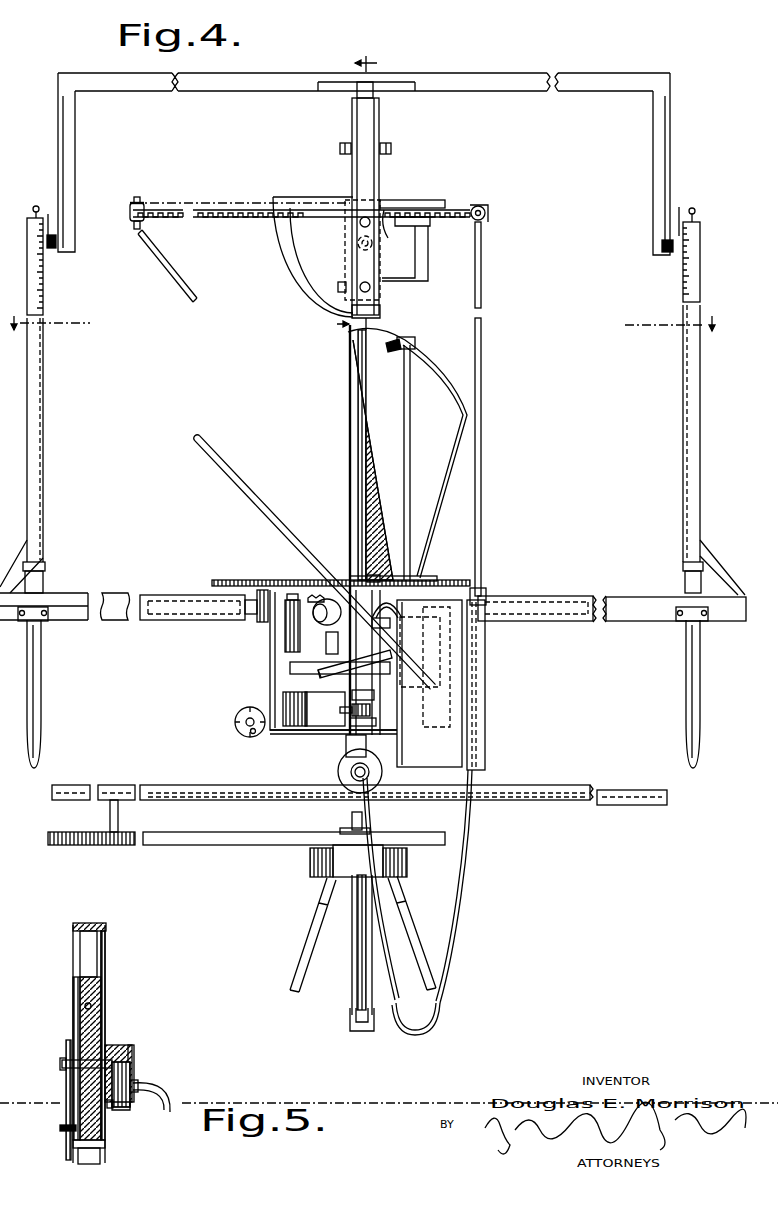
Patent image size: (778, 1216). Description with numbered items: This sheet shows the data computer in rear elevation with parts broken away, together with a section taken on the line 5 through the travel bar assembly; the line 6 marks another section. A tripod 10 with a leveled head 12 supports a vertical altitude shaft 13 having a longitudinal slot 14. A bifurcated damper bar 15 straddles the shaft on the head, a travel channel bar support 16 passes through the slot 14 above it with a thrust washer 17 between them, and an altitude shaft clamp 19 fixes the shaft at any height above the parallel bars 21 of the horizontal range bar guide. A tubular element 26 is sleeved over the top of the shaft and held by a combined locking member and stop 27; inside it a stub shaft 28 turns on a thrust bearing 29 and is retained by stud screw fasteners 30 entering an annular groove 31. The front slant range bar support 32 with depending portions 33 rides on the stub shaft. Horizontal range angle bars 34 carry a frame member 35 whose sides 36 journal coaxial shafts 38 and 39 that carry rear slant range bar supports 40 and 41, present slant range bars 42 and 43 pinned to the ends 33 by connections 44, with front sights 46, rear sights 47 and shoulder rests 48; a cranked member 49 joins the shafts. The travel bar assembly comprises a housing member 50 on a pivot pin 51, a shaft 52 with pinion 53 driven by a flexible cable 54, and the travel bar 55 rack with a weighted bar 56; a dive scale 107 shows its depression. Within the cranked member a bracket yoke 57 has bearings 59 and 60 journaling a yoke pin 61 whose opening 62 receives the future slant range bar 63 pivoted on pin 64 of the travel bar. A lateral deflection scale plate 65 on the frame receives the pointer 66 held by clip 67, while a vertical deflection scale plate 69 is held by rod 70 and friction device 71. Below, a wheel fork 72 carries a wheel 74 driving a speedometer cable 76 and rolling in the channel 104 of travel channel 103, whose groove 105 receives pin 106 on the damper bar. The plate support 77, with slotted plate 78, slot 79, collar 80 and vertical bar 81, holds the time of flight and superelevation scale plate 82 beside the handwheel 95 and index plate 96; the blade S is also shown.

In FIG. 4, the section line 5— 5 is at (350, 187).
In FIG. 4, the section line 6- 6 is at (363, 325).
In FIG. 4, the tripod 10 is at (300, 947).
In FIG. 4, the tripod head 12 is at (408, 864).
In FIG. 4, the altitude shaft rod 13 is at (350, 528).
In FIG. 5, the altitude shaft rod 13 is at (76, 1027).
In FIG. 4, the longitudinal diametral slot 14 is at (358, 499).
In FIG. 5, the longitudinal diametral slot 14 is at (93, 1157).
In FIG. 4, the bifurcated damper bar 15 is at (165, 845).
In FIG. 4, the travel channel bar support 16 is at (352, 818).
In FIG. 4, the thrust washer 17 is at (357, 840).
In FIG. 4, the altitude shaft clamp 19 is at (345, 745).
In FIG. 4, the parallel bars 21 is at (306, 727).
In FIG. 4, the tubular element 26 is at (380, 179).
In FIG. 5, the tubular element 26 is at (105, 963).
In FIG. 4, the combined locking member and stop 27 is at (392, 285).
In FIG. 5, the combined locking member and stop 27 is at (90, 1164).
In FIG. 4, the stub shaft 28 is at (356, 92).
In FIG. 5, the stub shaft 28 is at (80, 936).
In FIG. 5, the thrust bearing 29 is at (93, 1005).
In FIG. 4, the stud screw fasteners 30 is at (340, 150).
In FIG. 5, the annular groove 31 is at (103, 990).
In FIG. 4, the front slant range bar support 32 is at (527, 88).
In FIG. 5, the front slant range bar support 32 is at (106, 925).
In FIG. 4, the depending portions 33 is at (75, 180).
In FIG. 4, the horizontal range angle bars 34 is at (283, 712).
In FIG. 4, the frame member 35 is at (276, 734).
In FIG. 4, the frame sides 36 is at (272, 648).
In FIG. 4, the shaft 38 is at (252, 618).
In FIG. 4, the shaft 39 is at (480, 592).
In FIG. 4, the rear slant range bar support 40 is at (109, 592).
In FIG. 4, the rear slant range bar support 41 is at (620, 599).
In FIG. 4, the present slant range bar 42 is at (44, 430).
In FIG. 4, the present slant range bar 43 is at (700, 401).
In FIG. 4, the pin and slot connection 44 is at (48, 220).
In FIG. 4, the front sights 46 is at (33, 210).
In FIG. 4, the rear sights 47 is at (45, 568).
In FIG. 4, the shoulder rests 48 is at (42, 679).
In FIG. 4, the cranked member 49 is at (288, 658).
In FIG. 4, the housing member 50 is at (420, 203).
In FIG. 5, the housing member 50 is at (133, 1053).
In FIG. 4, the pivot pin 51 is at (359, 224).
In FIG. 5, the pivot pin 51 is at (62, 1062).
In FIG. 4, the shaft 52 is at (354, 252).
In FIG. 5, the shaft 52 is at (110, 1106).
In FIG. 4, the pinion 53 is at (386, 241).
In FIG. 5, the pinion 53 is at (125, 1106).
In FIG. 5, the flexible cable 54 is at (166, 1096).
In FIG. 4, the travel bar 55 is at (478, 206).
In FIG. 5, the travel bar 55 is at (113, 1046).
In FIG. 4, the depending weighted bar 56 is at (481, 412).
In FIG. 4, the U-shaped bracket yoke 57 is at (333, 651).
In FIG. 4, the bearing 59 is at (329, 612).
In FIG. 4, the bearing 60 is at (390, 605).
In FIG. 4, the yoke pin 61 is at (327, 601).
In FIG. 4, the diametral opening 62 is at (374, 582).
In FIG. 4, the future slant range bar 63 is at (190, 293).
In FIG. 4, the pin 64 is at (130, 231).
In FIG. 4, the arcuate lateral deflection scale plate 65 is at (250, 581).
In FIG. 4, the lateral scale pointer 66 is at (428, 580).
In FIG. 4, the U-shaped clip 67 is at (390, 623).
In FIG. 4, the vertical deflection scale plate 69 is at (437, 375).
In FIG. 4, the rod 70 is at (406, 473).
In FIG. 4, the friction device 71 is at (416, 341).
In FIG. 4, the wheel fork 72 is at (350, 759).
In FIG. 4, the wheel 74 is at (382, 778).
In FIG. 4, the flexible speedometer cable 76 is at (463, 900).
In FIG. 4, the time of flight and superelevation plate support 77 is at (354, 704).
In FIG. 4, the vertically disposed plate 78 is at (378, 712).
In FIG. 4, the slot 79 is at (395, 726).
In FIG. 4, the collar 80 is at (348, 712).
In FIG. 4, the vertical bar 81 is at (400, 765).
In FIG. 4, the time of flight and superelevation scale plate 82 is at (485, 757).
In FIG. 4, the handwheel 95 is at (236, 725).
In FIG. 4, the index plate 96 is at (248, 735).
In FIG. 4, the travel channel 103 is at (546, 797).
In FIG. 4, the channel 104 is at (158, 792).
In FIG. 4, the groove 105 is at (180, 802).
In FIG. 4, the pin 106 is at (118, 817).
In FIG. 4, the dive scale 107 is at (305, 290).
In FIG. 5, the dive scale 107 is at (68, 1107).
In FIG. 4, the blade S is at (372, 562).